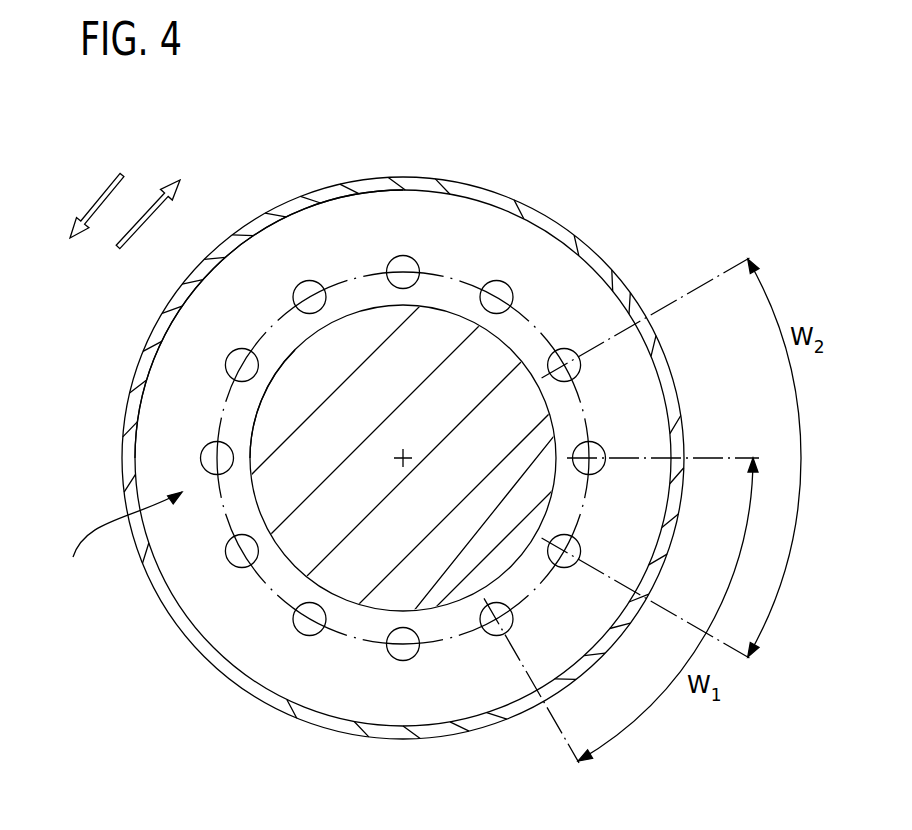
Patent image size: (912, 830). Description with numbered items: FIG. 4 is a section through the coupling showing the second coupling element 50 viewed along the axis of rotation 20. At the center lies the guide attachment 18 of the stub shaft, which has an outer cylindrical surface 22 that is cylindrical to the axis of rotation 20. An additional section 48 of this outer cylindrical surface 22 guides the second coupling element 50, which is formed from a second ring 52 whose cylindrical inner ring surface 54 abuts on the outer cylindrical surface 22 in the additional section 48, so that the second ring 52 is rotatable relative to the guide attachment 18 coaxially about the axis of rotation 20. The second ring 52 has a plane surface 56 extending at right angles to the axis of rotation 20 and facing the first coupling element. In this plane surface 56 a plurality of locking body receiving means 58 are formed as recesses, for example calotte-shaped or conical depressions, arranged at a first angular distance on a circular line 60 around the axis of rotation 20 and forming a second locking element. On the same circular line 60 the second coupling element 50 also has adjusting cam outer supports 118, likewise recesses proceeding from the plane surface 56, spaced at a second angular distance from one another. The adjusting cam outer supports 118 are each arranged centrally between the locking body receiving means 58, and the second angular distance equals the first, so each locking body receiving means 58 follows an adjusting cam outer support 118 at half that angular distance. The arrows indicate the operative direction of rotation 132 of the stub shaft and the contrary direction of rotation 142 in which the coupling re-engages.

The guide attachment 18 is at (445, 307).
The axis of rotation 20 is at (416, 450).
The outer cylindrical surface 22 is at (514, 345).
The additional section 48 is at (384, 294).
The second coupling element 50 is at (114, 540).
The second ring 52 is at (193, 582).
The cylindrical inner ring surface 54 is at (268, 385).
The plane surface 56 is at (173, 422).
The locking body receiving means 58 is at (600, 446).
The circular line 60 is at (263, 592).
The adjusting cam outer supports 118 is at (567, 350).
The direction of rotation 132 is at (156, 204).
The direction of rotation 142 is at (96, 197).